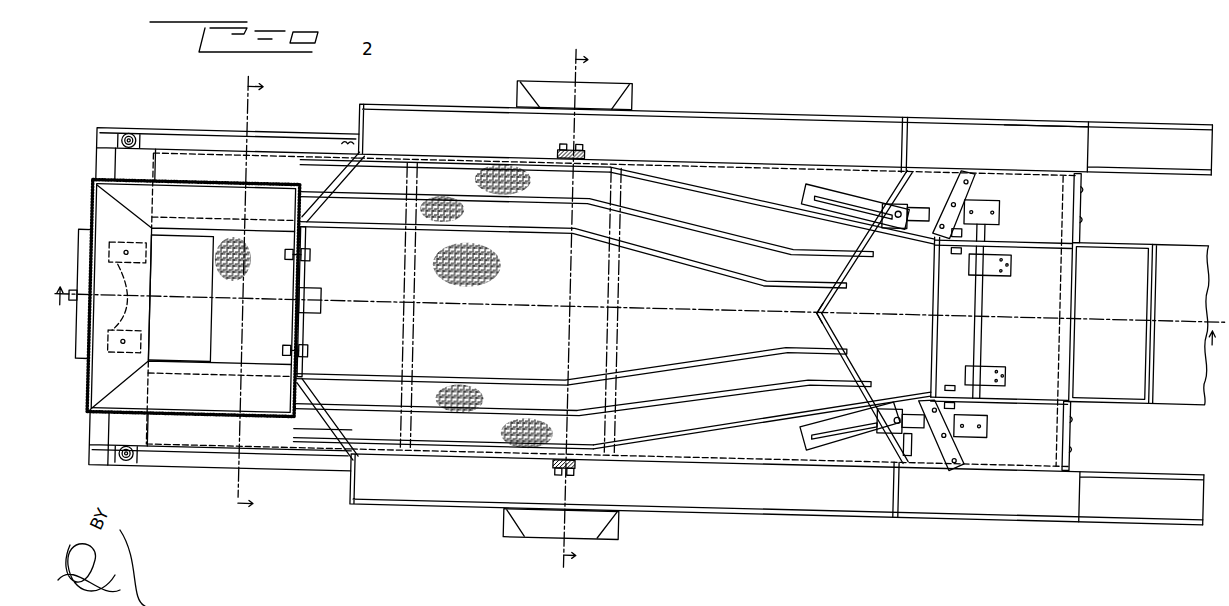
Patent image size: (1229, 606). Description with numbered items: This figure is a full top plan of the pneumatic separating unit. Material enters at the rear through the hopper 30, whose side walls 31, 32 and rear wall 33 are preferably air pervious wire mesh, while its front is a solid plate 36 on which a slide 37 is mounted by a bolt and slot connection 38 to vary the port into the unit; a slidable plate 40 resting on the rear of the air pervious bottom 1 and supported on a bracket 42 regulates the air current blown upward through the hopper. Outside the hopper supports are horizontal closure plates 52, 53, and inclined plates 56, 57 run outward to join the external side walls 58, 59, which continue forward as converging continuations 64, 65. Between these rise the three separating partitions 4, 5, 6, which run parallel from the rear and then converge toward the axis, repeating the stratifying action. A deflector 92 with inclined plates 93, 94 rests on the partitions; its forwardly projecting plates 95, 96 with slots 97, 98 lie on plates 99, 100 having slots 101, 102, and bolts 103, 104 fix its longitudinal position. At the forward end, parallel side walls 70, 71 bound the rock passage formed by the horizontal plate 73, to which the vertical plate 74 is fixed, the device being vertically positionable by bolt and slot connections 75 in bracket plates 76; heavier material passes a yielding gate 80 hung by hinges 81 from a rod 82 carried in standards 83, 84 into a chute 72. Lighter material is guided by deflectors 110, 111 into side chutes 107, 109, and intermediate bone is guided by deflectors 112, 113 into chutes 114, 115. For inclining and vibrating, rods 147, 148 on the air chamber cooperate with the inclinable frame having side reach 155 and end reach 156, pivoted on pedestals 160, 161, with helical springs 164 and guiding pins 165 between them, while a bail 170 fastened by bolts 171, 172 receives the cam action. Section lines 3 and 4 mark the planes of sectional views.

The air pervious bottom 1 is at (455, 283).
The section line 3- 3 is at (575, 313).
The separating partition 4 is at (542, 236).
The separating partition 5 is at (545, 205).
The separating partition 6 is at (556, 172).
The hopper 30 is at (112, 388).
The hopper side wall 31 is at (213, 178).
The hopper side wall 32 is at (204, 422).
The hopper rear wall 33 is at (90, 232).
The hopper front wall plate 36 is at (321, 337).
The slide 37 is at (305, 287).
The bolt and slot connection 38 is at (312, 262).
The slidable plate 40 is at (204, 343).
The bracket 42 is at (140, 290).
The horizontal closure plate 52 is at (262, 173).
The horizontal closure plate 53 is at (205, 443).
The inclined plate 56 is at (327, 427).
The inclined plate 57 is at (332, 186).
The external side wall 58 is at (431, 457).
The external side wall 59 is at (458, 158).
The side wall continuation 64 is at (727, 431).
The side wall continuation 65 is at (705, 181).
The forward side wall 70 is at (1068, 422).
The forward side wall 71 is at (1028, 223).
The chute 72 is at (1142, 234).
The horizontal plate 73 is at (1040, 350).
The vertical plate 74 is at (931, 320).
The bolt and slot connection 75 is at (967, 198).
The bracket plate 76 is at (966, 242).
The gate 80 is at (1041, 297).
The hinge 81 is at (991, 259).
The rod 82 is at (973, 291).
The standard 83 is at (982, 205).
The standard 84 is at (992, 410).
The deflector 92 is at (815, 312).
The deflector plate 93 is at (848, 361).
The deflector plate 94 is at (849, 260).
The forwardly projecting plate 95 is at (926, 445).
The forwardly projecting plate 96 is at (916, 189).
The slot 97 is at (924, 440).
The slot 98 is at (925, 155).
The side wall plate 99 is at (824, 446).
The side wall plate 100 is at (805, 178).
The slot 101 is at (845, 425).
The slot 102 is at (852, 197).
The bolt 103 is at (899, 406).
The bolt 104 is at (898, 212).
The chute 107 is at (670, 499).
The chute 109 is at (667, 116).
The deflector 110 is at (883, 454).
The deflector 111 is at (882, 170).
The deflector 112 is at (969, 452).
The deflector 113 is at (1047, 134).
The chute 114 is at (1055, 490).
The chute 115 is at (1044, 136).
The rod 147 is at (232, 466).
The rod 148 is at (178, 145).
The side reach 155 is at (157, 140).
The end reach 156 is at (103, 180).
The pedestal 160 is at (522, 530).
The pedestal 161 is at (532, 93).
The helical spring 164 is at (126, 146).
The pin 165 is at (118, 150).
The bail 170 is at (585, 155).
The bolt 171 is at (556, 478).
The bolt 172 is at (553, 146).